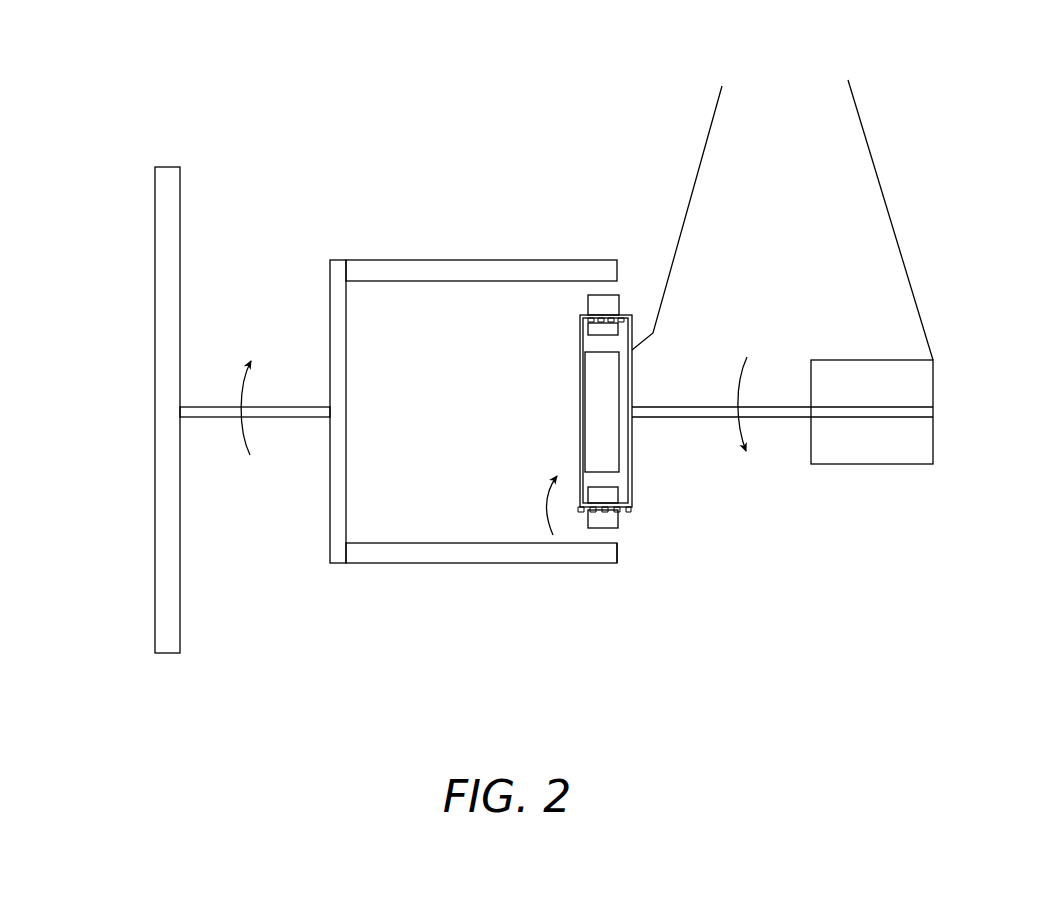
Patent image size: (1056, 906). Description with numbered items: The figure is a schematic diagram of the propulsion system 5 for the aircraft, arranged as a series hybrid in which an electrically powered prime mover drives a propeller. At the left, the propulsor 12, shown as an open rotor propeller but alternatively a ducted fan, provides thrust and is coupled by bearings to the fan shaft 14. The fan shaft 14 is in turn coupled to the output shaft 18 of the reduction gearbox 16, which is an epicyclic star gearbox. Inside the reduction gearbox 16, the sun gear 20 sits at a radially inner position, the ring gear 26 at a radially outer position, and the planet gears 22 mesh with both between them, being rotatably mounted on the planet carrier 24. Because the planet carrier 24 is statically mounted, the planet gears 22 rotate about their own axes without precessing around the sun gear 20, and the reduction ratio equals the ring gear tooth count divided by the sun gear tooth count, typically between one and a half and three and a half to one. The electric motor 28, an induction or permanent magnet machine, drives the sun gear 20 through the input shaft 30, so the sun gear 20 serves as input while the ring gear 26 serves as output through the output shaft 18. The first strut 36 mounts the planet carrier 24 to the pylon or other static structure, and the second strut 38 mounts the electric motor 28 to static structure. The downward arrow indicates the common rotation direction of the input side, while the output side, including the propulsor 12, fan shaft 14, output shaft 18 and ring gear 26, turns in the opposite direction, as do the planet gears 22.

The propulsion system 5 is at (498, 113).
The propulsor 12 is at (155, 215).
The fan shaft 14 is at (287, 417).
The reduction gearbox 16 is at (598, 576).
The output shaft 18 is at (330, 297).
The sun gear 20 is at (597, 370).
The planet gears 22 is at (608, 528).
The planet carrier 24 is at (632, 485).
The ring gear 26 is at (617, 552).
The electric motor 28 is at (935, 437).
The input shaft 30 is at (685, 405).
The first strut 36 is at (698, 165).
The second strut 38 is at (875, 160).